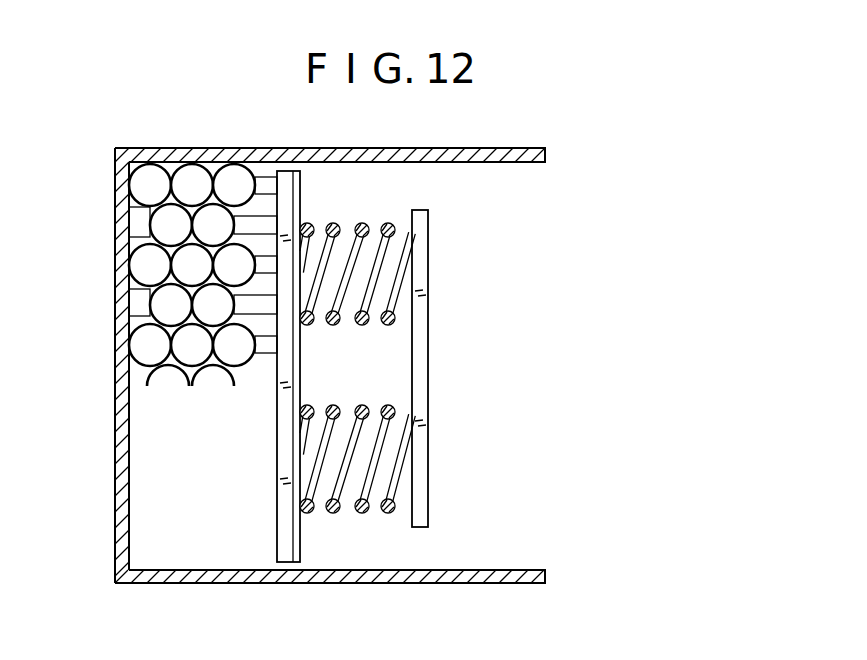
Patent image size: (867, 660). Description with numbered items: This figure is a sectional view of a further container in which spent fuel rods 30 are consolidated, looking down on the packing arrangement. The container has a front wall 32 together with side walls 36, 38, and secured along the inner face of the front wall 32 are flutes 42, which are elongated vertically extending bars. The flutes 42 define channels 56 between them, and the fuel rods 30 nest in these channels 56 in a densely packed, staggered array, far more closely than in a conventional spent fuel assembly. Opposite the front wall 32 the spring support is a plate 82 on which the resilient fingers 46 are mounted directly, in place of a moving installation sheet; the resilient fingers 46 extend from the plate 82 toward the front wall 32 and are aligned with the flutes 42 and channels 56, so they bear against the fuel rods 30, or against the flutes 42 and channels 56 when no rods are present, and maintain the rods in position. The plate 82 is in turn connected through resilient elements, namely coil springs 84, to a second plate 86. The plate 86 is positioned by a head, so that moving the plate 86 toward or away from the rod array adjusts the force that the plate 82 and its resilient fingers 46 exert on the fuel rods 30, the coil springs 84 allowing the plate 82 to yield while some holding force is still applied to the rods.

The fuel rods 30 is at (155, 275).
The front wall 32 is at (114, 405).
The side wall 36 is at (252, 149).
The side wall 38 is at (180, 584).
The flutes 42 is at (133, 223).
The resilient fingers 46 is at (267, 190).
The channels 56 is at (136, 194).
The plate 82 is at (301, 203).
The coil springs 84 is at (383, 222).
The plate 86 is at (429, 393).